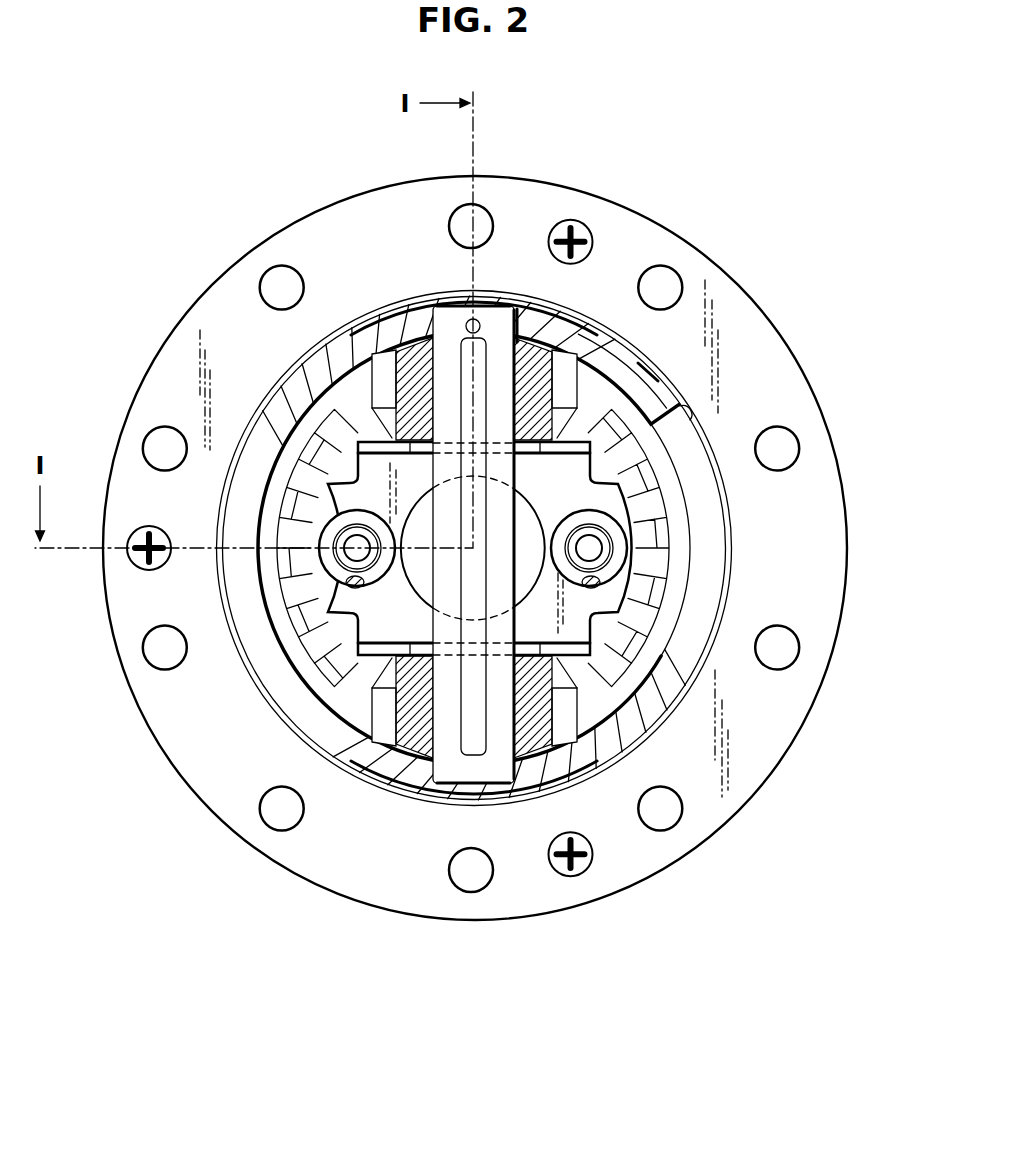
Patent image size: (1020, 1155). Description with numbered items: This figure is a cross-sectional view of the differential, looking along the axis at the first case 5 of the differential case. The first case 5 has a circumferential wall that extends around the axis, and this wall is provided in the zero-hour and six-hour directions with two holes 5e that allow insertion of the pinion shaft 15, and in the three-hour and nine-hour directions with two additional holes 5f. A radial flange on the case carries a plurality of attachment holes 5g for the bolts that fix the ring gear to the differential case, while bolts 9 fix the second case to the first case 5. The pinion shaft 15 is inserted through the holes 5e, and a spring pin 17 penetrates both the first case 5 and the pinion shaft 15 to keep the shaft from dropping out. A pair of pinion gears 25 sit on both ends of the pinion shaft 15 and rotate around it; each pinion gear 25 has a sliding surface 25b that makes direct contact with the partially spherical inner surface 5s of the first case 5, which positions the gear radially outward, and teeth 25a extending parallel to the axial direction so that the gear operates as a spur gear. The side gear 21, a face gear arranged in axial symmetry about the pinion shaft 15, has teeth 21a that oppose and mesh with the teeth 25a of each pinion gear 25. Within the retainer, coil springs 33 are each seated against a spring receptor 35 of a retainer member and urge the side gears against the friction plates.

The first case 5 is at (297, 197).
The holes 5e is at (446, 300).
The additional holes 5f is at (668, 422).
The attachment holes 5g is at (479, 205).
The inner surface 5s is at (521, 338).
The bolts 9 is at (575, 222).
The pinion shaft 15 is at (447, 782).
The spring pin 17 is at (479, 321).
The side gear 21 is at (648, 515).
The teeth 21a is at (662, 470).
The pinion gears 25 is at (563, 364).
The teeth 25a is at (546, 345).
The sliding surface 25b is at (408, 343).
The coil springs 33 is at (628, 585).
The spring receptor 35 is at (603, 556).